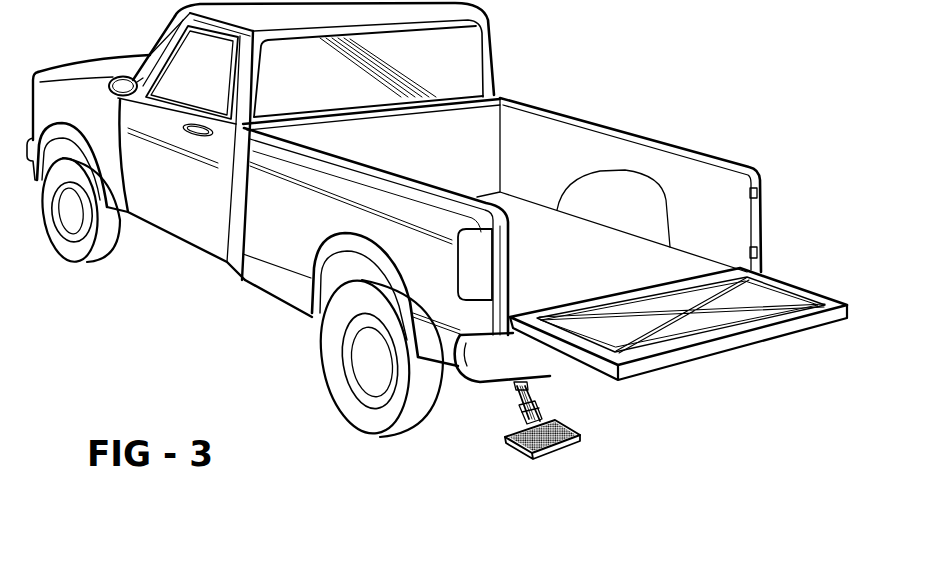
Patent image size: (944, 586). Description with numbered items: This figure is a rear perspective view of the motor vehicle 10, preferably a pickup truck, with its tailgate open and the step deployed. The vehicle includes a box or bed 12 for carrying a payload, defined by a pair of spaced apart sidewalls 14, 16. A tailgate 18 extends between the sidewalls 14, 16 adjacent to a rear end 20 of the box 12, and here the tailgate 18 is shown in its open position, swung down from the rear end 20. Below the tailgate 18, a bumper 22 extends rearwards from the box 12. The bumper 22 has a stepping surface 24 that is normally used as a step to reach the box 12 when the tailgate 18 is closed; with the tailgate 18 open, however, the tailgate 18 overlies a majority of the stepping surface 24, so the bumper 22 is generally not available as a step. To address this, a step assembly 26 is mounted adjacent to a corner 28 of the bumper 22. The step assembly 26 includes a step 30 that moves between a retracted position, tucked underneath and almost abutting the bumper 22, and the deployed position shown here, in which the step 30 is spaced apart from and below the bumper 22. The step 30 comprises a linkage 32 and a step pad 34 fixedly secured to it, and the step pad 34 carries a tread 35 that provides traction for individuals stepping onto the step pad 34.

The motor vehicle 10 is at (807, 352).
The box 12 is at (530, 133).
The sidewall 14 is at (408, 177).
The sidewall 16 is at (677, 144).
The tailgate 18 is at (713, 356).
The rear end 20 is at (722, 263).
The bumper 22 is at (547, 373).
The stepping surface 24 is at (510, 318).
The step assembly 26 is at (538, 454).
The corner 28 is at (487, 384).
The step 30 is at (568, 447).
The linkage 32 is at (510, 421).
The step pad 34 is at (508, 453).
The tread 35 is at (543, 451).